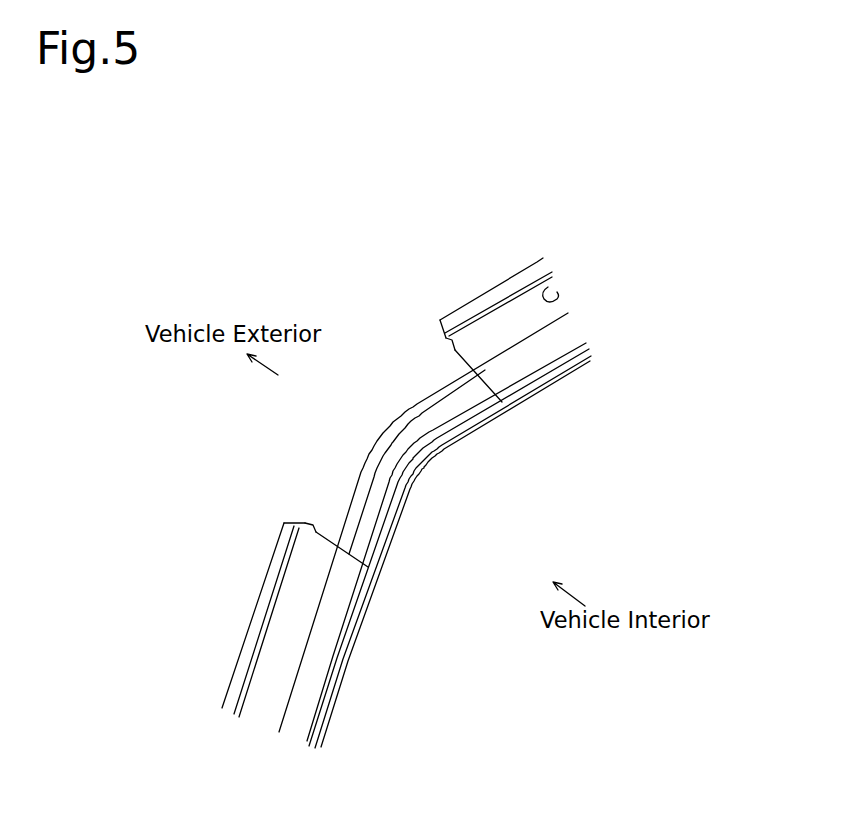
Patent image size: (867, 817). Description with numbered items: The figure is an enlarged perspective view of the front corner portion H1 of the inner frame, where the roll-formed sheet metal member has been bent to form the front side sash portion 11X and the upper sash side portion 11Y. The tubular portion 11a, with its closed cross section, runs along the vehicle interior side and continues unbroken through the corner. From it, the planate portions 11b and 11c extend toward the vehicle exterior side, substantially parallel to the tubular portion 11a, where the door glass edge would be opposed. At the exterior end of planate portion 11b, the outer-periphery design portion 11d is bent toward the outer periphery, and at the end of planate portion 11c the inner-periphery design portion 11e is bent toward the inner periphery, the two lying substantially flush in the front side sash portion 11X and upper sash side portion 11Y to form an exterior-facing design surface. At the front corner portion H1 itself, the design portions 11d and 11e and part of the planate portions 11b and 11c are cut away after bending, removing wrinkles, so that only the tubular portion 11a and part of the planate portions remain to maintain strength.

The tubular portion 11a is at (377, 528).
The planate portion 11b is at (478, 334).
The planate portion 11c is at (452, 362).
The outer-periphery design portion 11d is at (484, 296).
The inner-periphery design portion 11e is at (449, 348).
The front side sash portion 11X is at (363, 703).
The upper sash side portion 11Y is at (588, 391).
The front corner portion H1 is at (449, 489).